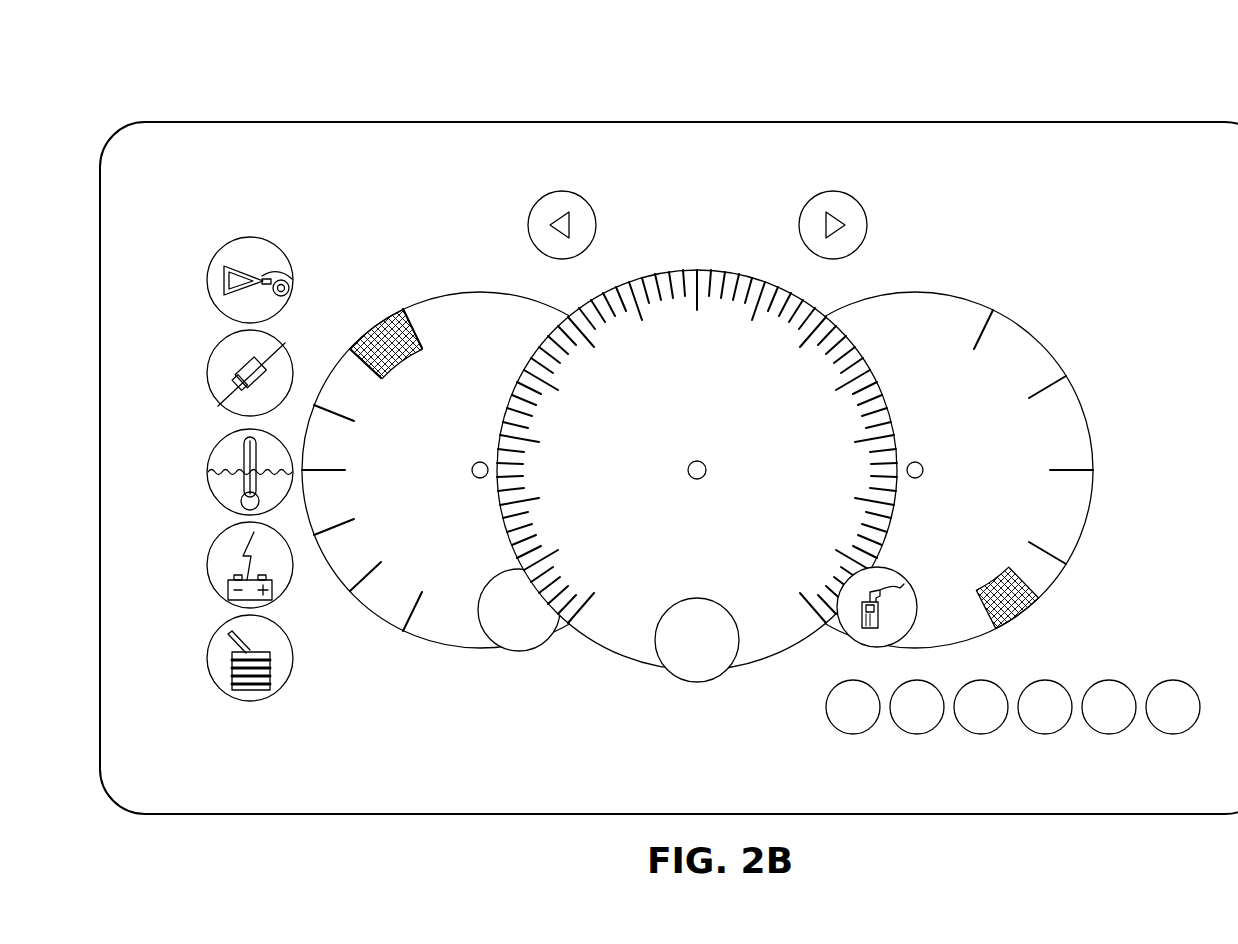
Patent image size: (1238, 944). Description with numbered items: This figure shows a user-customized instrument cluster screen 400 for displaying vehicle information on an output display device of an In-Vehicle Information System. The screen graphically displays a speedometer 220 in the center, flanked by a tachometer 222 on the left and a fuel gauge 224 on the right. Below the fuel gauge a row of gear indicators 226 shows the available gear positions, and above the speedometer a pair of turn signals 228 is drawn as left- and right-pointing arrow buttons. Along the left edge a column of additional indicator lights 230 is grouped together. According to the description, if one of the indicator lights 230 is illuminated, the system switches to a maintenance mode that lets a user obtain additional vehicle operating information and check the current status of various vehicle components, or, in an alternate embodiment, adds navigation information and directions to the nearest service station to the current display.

The instrument cluster display 400 is at (1013, 97).
The speedometer 220 is at (620, 652).
The tachometer 222 is at (373, 619).
The fuel gauge 224 is at (1030, 331).
The gear indicators 226 is at (822, 742).
The turn signals 228 is at (812, 215).
The indicator lights 230 is at (193, 230).